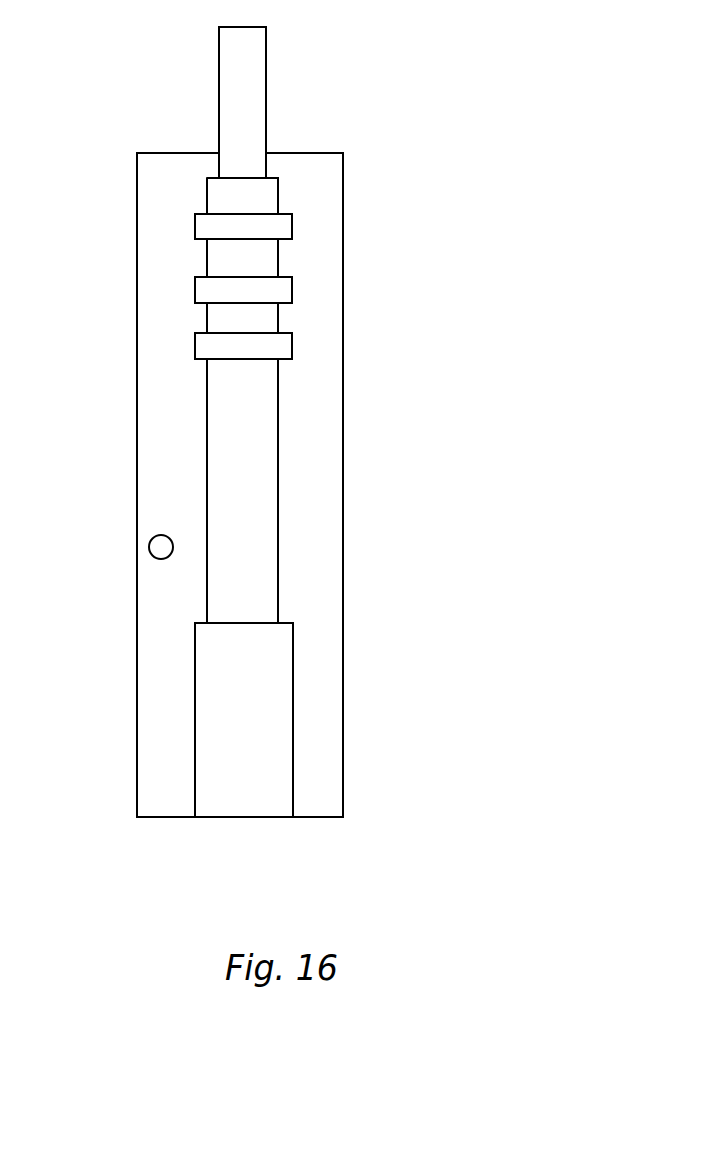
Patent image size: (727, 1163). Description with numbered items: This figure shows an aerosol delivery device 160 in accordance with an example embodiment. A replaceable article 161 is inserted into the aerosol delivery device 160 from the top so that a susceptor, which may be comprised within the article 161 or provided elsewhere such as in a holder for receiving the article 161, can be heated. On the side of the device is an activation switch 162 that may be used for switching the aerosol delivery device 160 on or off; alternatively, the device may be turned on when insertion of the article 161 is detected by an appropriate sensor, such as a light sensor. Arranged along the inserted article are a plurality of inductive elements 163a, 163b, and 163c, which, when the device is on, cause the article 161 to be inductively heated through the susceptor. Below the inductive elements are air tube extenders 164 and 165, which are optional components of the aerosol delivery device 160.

The aerosol delivery device 160 is at (528, 808).
The replaceable article 161 is at (264, 67).
The activation switch 162 is at (150, 542).
The inductive element 163a is at (288, 348).
The inductive element 163b is at (288, 292).
The inductive element 163c is at (288, 229).
The air tube extender 164 is at (278, 469).
The air tube extender 165 is at (293, 700).